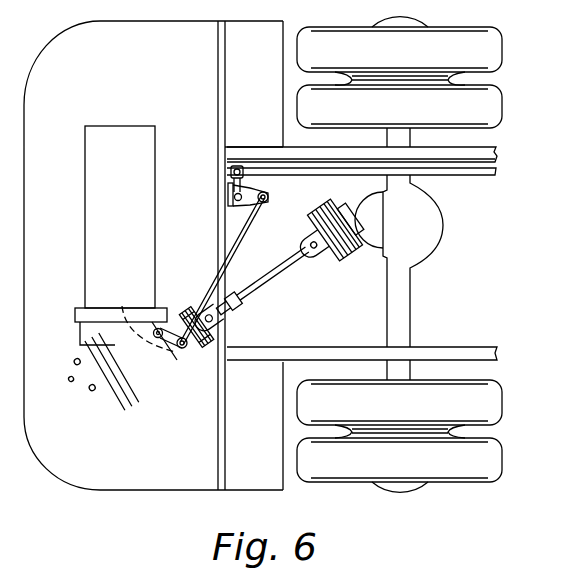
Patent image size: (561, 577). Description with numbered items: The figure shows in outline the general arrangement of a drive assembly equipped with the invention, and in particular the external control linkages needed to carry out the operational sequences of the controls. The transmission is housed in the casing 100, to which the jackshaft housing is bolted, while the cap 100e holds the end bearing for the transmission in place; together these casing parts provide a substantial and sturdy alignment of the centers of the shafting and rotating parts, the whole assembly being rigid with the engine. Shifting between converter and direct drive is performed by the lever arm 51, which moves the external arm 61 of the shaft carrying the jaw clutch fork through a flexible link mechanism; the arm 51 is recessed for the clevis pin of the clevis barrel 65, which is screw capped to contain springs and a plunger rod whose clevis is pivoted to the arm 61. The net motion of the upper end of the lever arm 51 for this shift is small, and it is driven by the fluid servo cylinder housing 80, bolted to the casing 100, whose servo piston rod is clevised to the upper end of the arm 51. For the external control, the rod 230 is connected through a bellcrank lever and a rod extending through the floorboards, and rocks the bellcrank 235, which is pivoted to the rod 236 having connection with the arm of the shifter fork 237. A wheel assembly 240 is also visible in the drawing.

The lever arm 51 is at (79, 367).
The external arm 61 is at (62, 393).
The clevis barrel 65 is at (113, 415).
The fluid servo cylinder housing 80 is at (160, 397).
The casing 100 is at (180, 345).
The cap 100e is at (62, 415).
The rod 230 is at (320, 174).
The bellcrank 235 is at (237, 183).
The rod 236 is at (256, 218).
The shifter fork 237 is at (128, 323).
The wheel assembly 240 is at (263, 297).